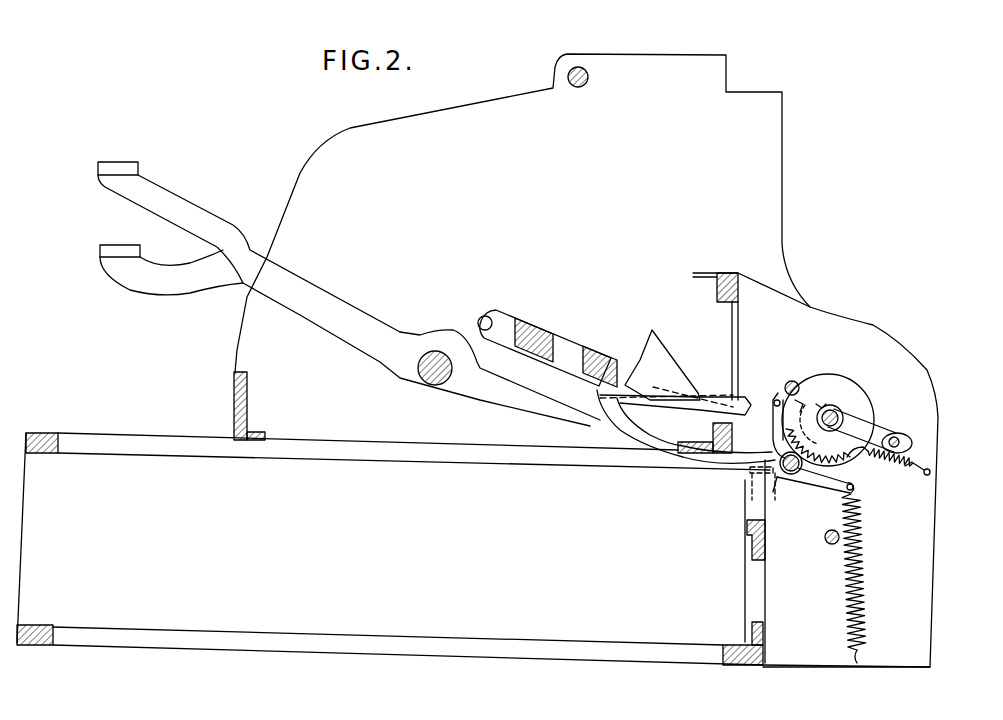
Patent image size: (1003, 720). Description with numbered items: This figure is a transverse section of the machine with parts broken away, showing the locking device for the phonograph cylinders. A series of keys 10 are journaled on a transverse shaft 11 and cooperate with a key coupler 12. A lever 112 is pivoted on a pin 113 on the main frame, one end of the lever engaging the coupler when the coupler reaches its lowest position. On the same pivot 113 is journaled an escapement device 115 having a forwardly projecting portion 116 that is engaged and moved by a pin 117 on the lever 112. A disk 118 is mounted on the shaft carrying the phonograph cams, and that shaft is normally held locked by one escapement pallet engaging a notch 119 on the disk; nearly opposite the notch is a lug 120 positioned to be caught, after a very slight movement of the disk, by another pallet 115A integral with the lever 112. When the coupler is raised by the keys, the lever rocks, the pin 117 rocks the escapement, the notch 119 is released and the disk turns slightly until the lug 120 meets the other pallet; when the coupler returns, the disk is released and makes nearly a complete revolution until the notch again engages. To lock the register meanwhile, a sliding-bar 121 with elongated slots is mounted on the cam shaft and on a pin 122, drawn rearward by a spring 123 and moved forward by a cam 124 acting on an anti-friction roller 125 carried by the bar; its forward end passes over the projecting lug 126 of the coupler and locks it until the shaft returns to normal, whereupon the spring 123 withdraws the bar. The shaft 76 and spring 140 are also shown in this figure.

The keys 10 is at (143, 223).
The transverse shaft 11 is at (435, 351).
The key coupler 12 is at (560, 340).
The shaft 76 is at (838, 410).
The lever 112 is at (733, 473).
The pin 113 is at (792, 474).
The escapement device 115 is at (849, 460).
The pallet 115A is at (776, 392).
The forwardly projecting portion 116 is at (790, 495).
The pin 117 is at (757, 480).
The disk 118 is at (862, 397).
The notch 119 is at (908, 464).
The lug 120 is at (838, 367).
The sliding-bar 121 is at (753, 417).
The pin 122 is at (895, 438).
The spring 123 is at (913, 462).
The cam 124 is at (842, 414).
The anti-friction roller 125 is at (822, 404).
The projecting lug 126 is at (630, 372).
The spring 140 is at (858, 557).